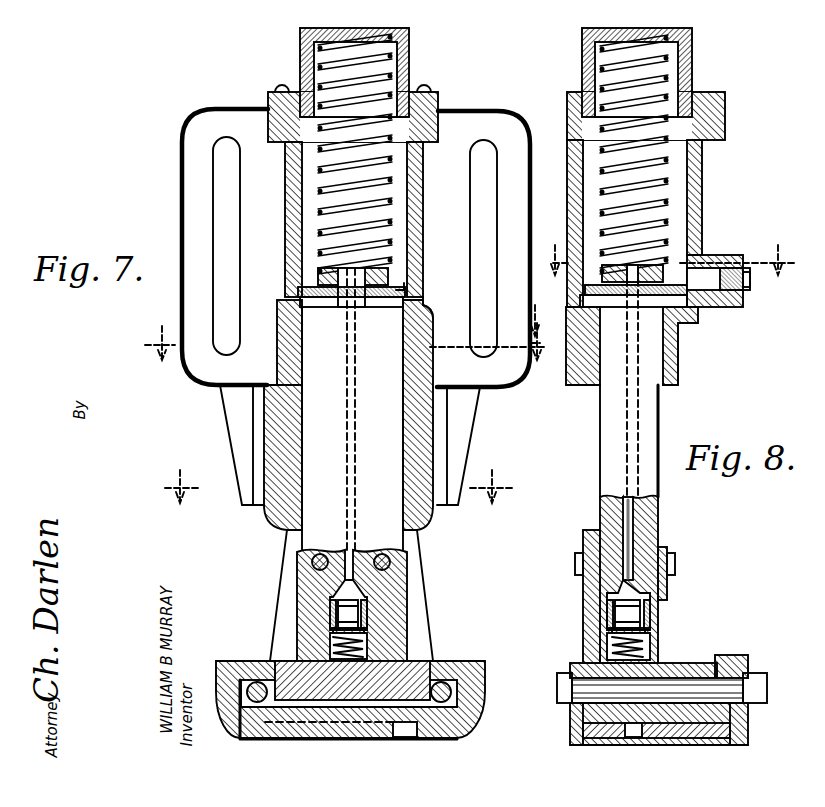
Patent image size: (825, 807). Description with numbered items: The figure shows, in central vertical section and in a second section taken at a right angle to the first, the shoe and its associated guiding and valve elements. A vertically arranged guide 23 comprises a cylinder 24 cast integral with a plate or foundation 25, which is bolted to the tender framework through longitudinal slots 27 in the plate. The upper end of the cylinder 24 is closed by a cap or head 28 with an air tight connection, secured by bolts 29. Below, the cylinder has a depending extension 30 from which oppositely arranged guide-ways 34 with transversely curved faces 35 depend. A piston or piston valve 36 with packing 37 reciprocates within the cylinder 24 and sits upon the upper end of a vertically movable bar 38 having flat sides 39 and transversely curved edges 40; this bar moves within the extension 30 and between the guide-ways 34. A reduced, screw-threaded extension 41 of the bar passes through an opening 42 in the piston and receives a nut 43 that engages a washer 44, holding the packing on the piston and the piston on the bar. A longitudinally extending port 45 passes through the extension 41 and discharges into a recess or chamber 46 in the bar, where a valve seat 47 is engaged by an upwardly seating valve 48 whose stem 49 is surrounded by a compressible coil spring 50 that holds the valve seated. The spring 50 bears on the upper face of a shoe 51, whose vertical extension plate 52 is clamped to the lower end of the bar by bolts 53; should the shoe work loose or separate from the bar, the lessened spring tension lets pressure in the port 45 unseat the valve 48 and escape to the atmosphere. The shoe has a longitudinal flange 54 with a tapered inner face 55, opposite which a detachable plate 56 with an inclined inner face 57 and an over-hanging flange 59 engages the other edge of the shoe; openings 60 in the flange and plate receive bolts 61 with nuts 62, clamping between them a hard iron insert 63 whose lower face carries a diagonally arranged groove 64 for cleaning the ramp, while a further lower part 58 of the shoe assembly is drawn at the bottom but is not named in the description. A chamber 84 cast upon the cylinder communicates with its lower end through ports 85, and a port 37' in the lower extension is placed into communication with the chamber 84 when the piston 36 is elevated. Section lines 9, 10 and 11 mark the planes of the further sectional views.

In FIG. 8, the section line 9- 9 is at (668, 260).
In FIG. 7, the section line 10- 10 is at (347, 341).
In FIG. 8, the section line 10- 10 is at (544, 326).
In FIG. 7, the section line 11- 11 is at (334, 485).
In FIG. 7, the guide 23 is at (525, 232).
In FIG. 8, the guide 23 is at (566, 196).
In FIG. 7, the cylinder 24 is at (424, 222).
In FIG. 8, the cylinder 24 is at (702, 166).
In FIG. 7, the plate or foundation 25 is at (406, 288).
In FIG. 7, the longitudinal slots 27 is at (212, 202).
In FIG. 7, the cap or head 28 is at (409, 32).
In FIG. 8, the cap or head 28 is at (582, 35).
In FIG. 7, the bolts 29 is at (424, 91).
In FIG. 7, the depending extension 30 is at (433, 320).
In FIG. 7, the guide-ways 34 is at (267, 430).
In FIG. 7, the transversely curved faces 35 is at (285, 527).
In FIG. 8, the piston or piston valve 36 is at (690, 322).
In FIG. 7, the packing 37 is at (440, 304).
In FIG. 8, the packing 37 is at (694, 354).
In FIG. 8, the port 37' is at (689, 380).
In FIG. 7, the vertically movable bar 38 is at (392, 512).
In FIG. 8, the vertically movable bar 38 is at (659, 432).
In FIG. 8, the flat sides 39 is at (662, 532).
In FIG. 8, the transversely curved edges 40 is at (600, 448).
In FIG. 7, the reduced extension 41 is at (400, 250).
In FIG. 7, the opening 42 is at (339, 307).
In FIG. 7, the nut 43 is at (318, 279).
In FIG. 8, the nut 43 is at (660, 266).
In FIG. 7, the washer 44 is at (300, 293).
In FIG. 8, the washer 44 is at (585, 291).
In FIG. 7, the longitudinally extending port 45 is at (390, 560).
In FIG. 8, the longitudinally extending port 45 is at (634, 513).
In FIG. 7, the recess or chamber 46 is at (362, 588).
In FIG. 8, the recess or chamber 46 is at (632, 589).
In FIG. 8, the valve seat 47 is at (645, 625).
In FIG. 7, the upwardly seating valve 48 is at (362, 622).
In FIG. 8, the upwardly seating valve 48 is at (647, 634).
In FIG. 7, the stem 49 is at (333, 630).
In FIG. 8, the stem 49 is at (608, 656).
In FIG. 7, the compressible coil spring 50 is at (332, 645).
In FIG. 8, the compressible coil spring 50 is at (645, 655).
In FIG. 7, the shoe 51 is at (455, 663).
In FIG. 7, the vertical extension plate 52 is at (296, 570).
In FIG. 8, the vertical extension plate 52 is at (583, 605).
In FIG. 8, the bolts 53 is at (577, 570).
In FIG. 8, the longitudinal flange 54 is at (572, 742).
In FIG. 8, the tapered inner face 55 is at (597, 717).
In FIG. 8, the detachable plate 56 is at (745, 735).
In FIG. 8, the inclined inner face 57 is at (740, 718).
In FIG. 7, the bottom plate 58 is at (256, 740).
In FIG. 8, the bottom plate 58 is at (670, 742).
In FIG. 8, the over-hanging flange 59 is at (720, 664).
In FIG. 8, the openings 60 is at (748, 672).
In FIG. 7, the bolts 61 is at (258, 682).
In FIG. 8, the bolts 61 is at (698, 662).
In FIG. 8, the nuts 62 is at (767, 688).
In FIG. 7, the hard iron insert 63 is at (315, 742).
In FIG. 8, the hard iron insert 63 is at (705, 742).
In FIG. 7, the diagonally arranged groove 64 is at (405, 738).
In FIG. 8, the diagonally arranged groove 64 is at (637, 738).
In FIG. 8, the chamber 84 is at (707, 305).
In FIG. 8, the ports 85 is at (732, 268).